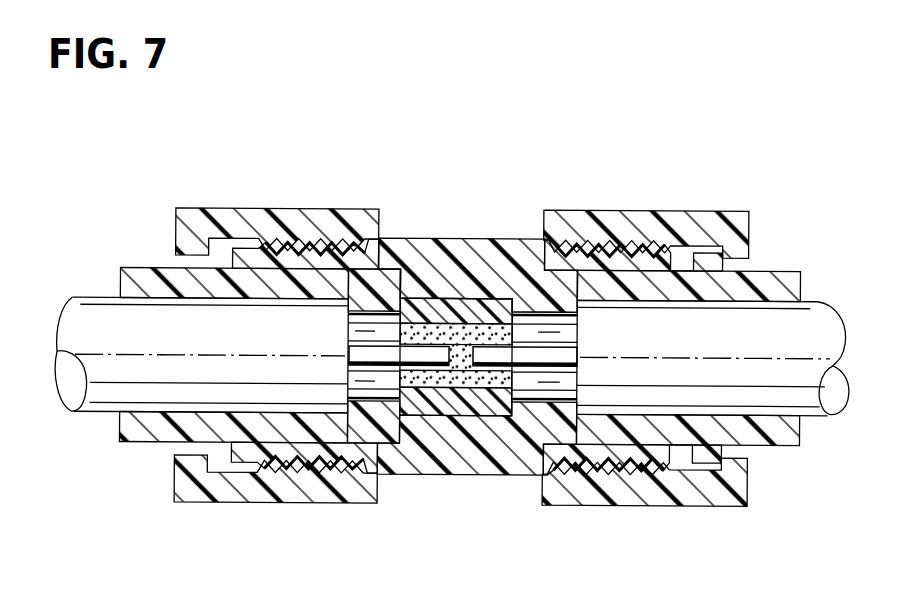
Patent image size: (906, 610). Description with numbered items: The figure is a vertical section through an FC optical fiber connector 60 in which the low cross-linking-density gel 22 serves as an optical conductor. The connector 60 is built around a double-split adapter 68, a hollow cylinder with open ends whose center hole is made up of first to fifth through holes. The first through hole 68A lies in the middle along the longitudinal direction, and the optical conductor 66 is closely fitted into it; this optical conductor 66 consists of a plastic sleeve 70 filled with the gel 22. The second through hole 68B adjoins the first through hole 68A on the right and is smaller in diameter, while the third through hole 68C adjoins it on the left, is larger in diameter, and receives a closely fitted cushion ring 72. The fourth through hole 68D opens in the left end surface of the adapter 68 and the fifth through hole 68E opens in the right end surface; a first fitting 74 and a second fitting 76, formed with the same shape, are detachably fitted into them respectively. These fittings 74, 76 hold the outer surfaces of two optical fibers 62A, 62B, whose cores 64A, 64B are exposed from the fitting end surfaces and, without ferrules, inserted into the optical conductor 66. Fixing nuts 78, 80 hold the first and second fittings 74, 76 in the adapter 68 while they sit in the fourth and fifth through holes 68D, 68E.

The FC optical fiber connector 60 is at (623, 170).
The optical fiber 62A is at (112, 373).
The optical fiber 62B is at (808, 389).
The core 64A is at (417, 390).
The core 64B is at (519, 375).
The optical conductor 66 is at (458, 256).
The low cross-linking-density gel 22 is at (434, 302).
The plastic sleeve 70 is at (472, 328).
The double-split adapter 68 is at (476, 366).
The first through hole 68A is at (477, 299).
The second through hole 68B is at (537, 313).
The third through hole 68C is at (390, 267).
The fourth through hole 68D is at (278, 269).
The fifth through hole 68E is at (640, 265).
The cushion ring 72 is at (360, 440).
The first fitting 74 is at (277, 441).
The second fitting 76 is at (620, 434).
The fixing nut 78 is at (195, 500).
The fixing nut 80 is at (693, 494).